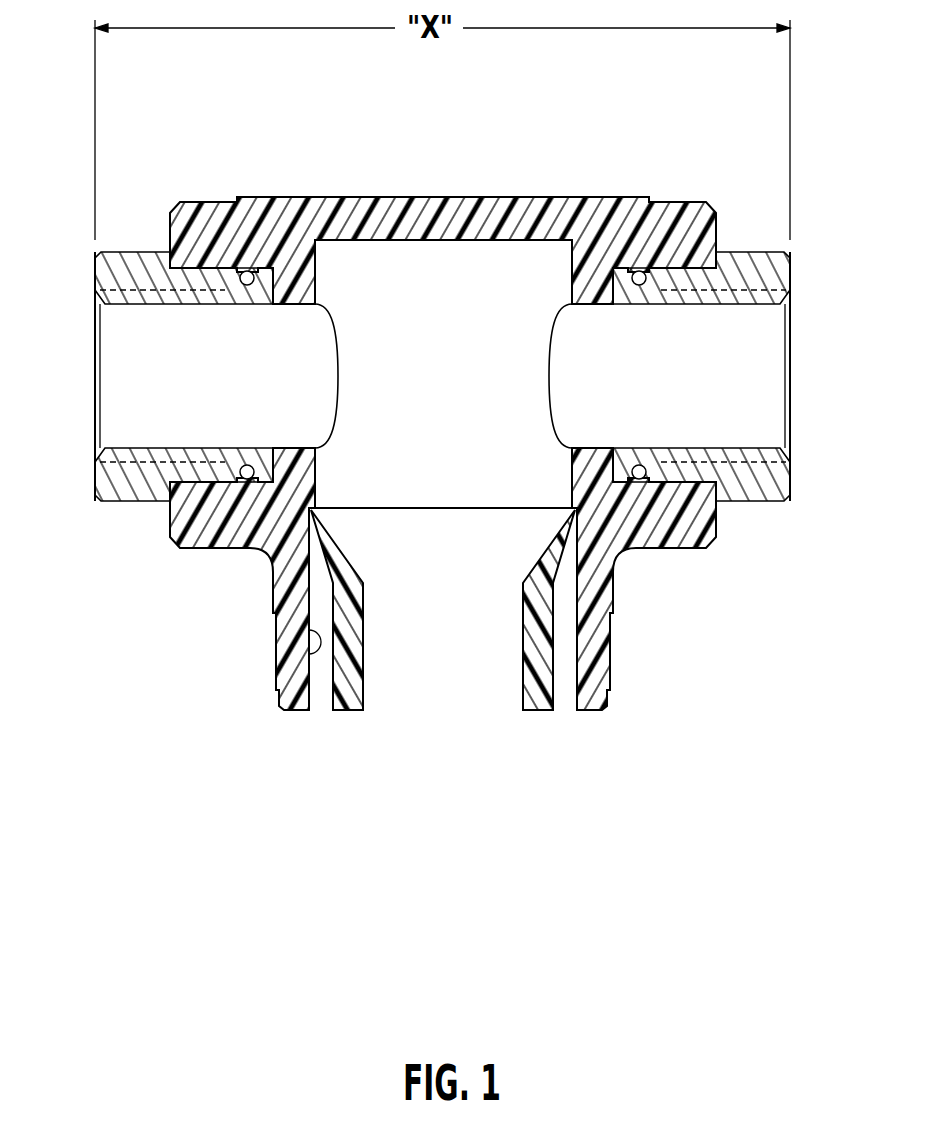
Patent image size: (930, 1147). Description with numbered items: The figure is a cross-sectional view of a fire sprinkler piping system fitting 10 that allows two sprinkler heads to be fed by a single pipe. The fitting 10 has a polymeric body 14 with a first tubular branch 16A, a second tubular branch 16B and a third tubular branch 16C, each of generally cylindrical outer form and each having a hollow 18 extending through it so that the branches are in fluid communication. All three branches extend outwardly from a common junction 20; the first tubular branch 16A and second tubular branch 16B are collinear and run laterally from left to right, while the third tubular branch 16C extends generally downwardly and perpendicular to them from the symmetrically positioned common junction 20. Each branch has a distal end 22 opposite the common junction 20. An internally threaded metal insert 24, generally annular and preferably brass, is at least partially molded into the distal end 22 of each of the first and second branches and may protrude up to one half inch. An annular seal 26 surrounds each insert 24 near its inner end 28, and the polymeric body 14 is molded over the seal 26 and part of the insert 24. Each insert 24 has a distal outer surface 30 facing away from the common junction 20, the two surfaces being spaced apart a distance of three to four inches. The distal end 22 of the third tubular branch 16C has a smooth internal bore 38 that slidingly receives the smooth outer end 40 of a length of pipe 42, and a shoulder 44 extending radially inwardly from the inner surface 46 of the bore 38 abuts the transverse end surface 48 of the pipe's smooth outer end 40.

The fire sprinkler piping system fitting 10 is at (224, 711).
The polymeric body 14 is at (287, 214).
The first tubular branch 16A is at (180, 214).
The second tubular branch 16B is at (707, 216).
The third tubular branch 16C is at (700, 722).
The hollow 18 is at (199, 386).
The common junction 20 is at (430, 414).
The distal end 22 is at (717, 242).
The internally threaded metal insert 24 is at (97, 466).
The annular seal 26 is at (247, 271).
The inner end 28 is at (275, 305).
The distal outer surface 30 is at (95, 276).
The smooth internal bore 38 is at (317, 680).
The smooth outer end 40 is at (311, 508).
The length of pipe 42 is at (354, 670).
The shoulder 44 is at (316, 500).
The inner surface 46 is at (308, 648).
The transverse end surface 48 is at (271, 562).